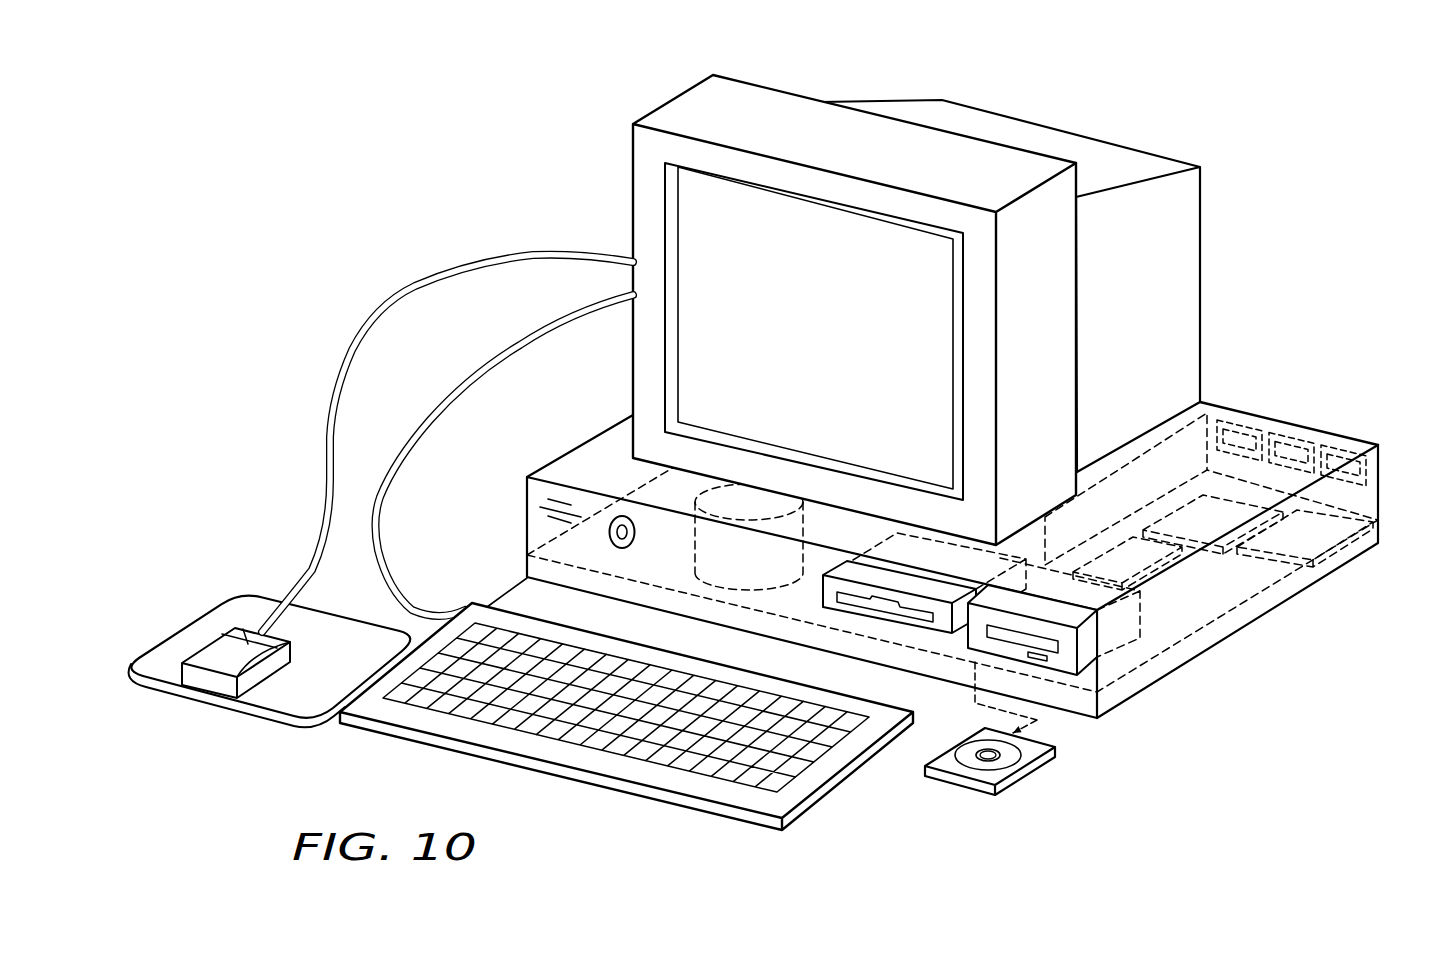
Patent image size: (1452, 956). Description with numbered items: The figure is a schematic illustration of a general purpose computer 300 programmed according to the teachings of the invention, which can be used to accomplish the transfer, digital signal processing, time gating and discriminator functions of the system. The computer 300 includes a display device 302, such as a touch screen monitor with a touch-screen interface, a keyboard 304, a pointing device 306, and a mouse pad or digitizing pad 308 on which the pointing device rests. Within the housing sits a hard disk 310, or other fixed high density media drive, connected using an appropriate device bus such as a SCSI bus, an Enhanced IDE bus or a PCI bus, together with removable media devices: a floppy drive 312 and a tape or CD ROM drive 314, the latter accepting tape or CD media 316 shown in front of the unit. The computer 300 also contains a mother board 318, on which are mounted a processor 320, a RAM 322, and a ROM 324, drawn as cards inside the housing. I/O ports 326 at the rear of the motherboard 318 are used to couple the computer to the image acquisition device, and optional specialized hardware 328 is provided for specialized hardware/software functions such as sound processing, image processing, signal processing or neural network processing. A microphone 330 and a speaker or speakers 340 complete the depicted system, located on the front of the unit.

The general purpose computer 300 is at (478, 146).
The display device 302 is at (1199, 184).
The keyboard 304 is at (812, 804).
The pointing device 306 is at (218, 632).
The mouse pad or digitizing pad 308 is at (253, 716).
The hard disk 310 is at (787, 527).
The floppy drive 312 is at (944, 633).
The tape or CD ROM drive 314 is at (1068, 655).
The tape or CD media 316 is at (1040, 762).
The mother board 318 is at (1358, 550).
The processor 320 is at (1148, 562).
The RAM 322 is at (1205, 540).
The ROM 324 is at (1300, 570).
The I/O ports 326 is at (1283, 430).
The specialized hardware 328 is at (1180, 420).
The microphone 330 is at (558, 500).
The speaker or speakers 340 is at (622, 516).